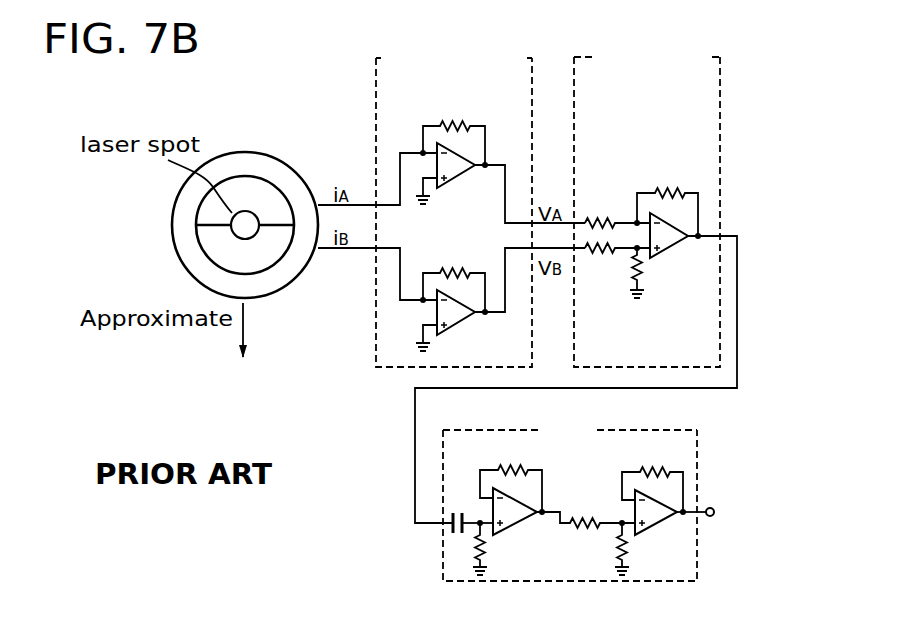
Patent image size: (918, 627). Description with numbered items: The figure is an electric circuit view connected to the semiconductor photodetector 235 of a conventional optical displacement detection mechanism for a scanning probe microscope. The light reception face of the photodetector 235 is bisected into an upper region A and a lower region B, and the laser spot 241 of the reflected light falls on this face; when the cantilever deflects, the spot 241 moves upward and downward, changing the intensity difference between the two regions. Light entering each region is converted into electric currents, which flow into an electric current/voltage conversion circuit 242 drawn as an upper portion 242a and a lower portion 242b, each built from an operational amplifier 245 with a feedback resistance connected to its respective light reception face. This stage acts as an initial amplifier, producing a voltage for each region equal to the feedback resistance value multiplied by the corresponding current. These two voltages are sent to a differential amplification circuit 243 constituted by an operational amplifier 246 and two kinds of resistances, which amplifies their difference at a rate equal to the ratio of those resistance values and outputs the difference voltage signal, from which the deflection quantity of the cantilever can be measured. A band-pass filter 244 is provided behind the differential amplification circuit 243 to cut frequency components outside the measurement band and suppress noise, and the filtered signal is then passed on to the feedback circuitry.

The photodetector 235 is at (246, 152).
The spot 241 is at (212, 250).
The electric current/voltage conversion circuit 242 is at (376, 90).
The first I-V conversion circuit 242a is at (505, 82).
The second I-V conversion circuit 242b is at (376, 340).
The differential amplification circuit 243 is at (615, 284).
The band-pass filter 244 is at (690, 443).
The operational amplifier 245 is at (458, 185).
The operational amplifier 246 is at (677, 245).